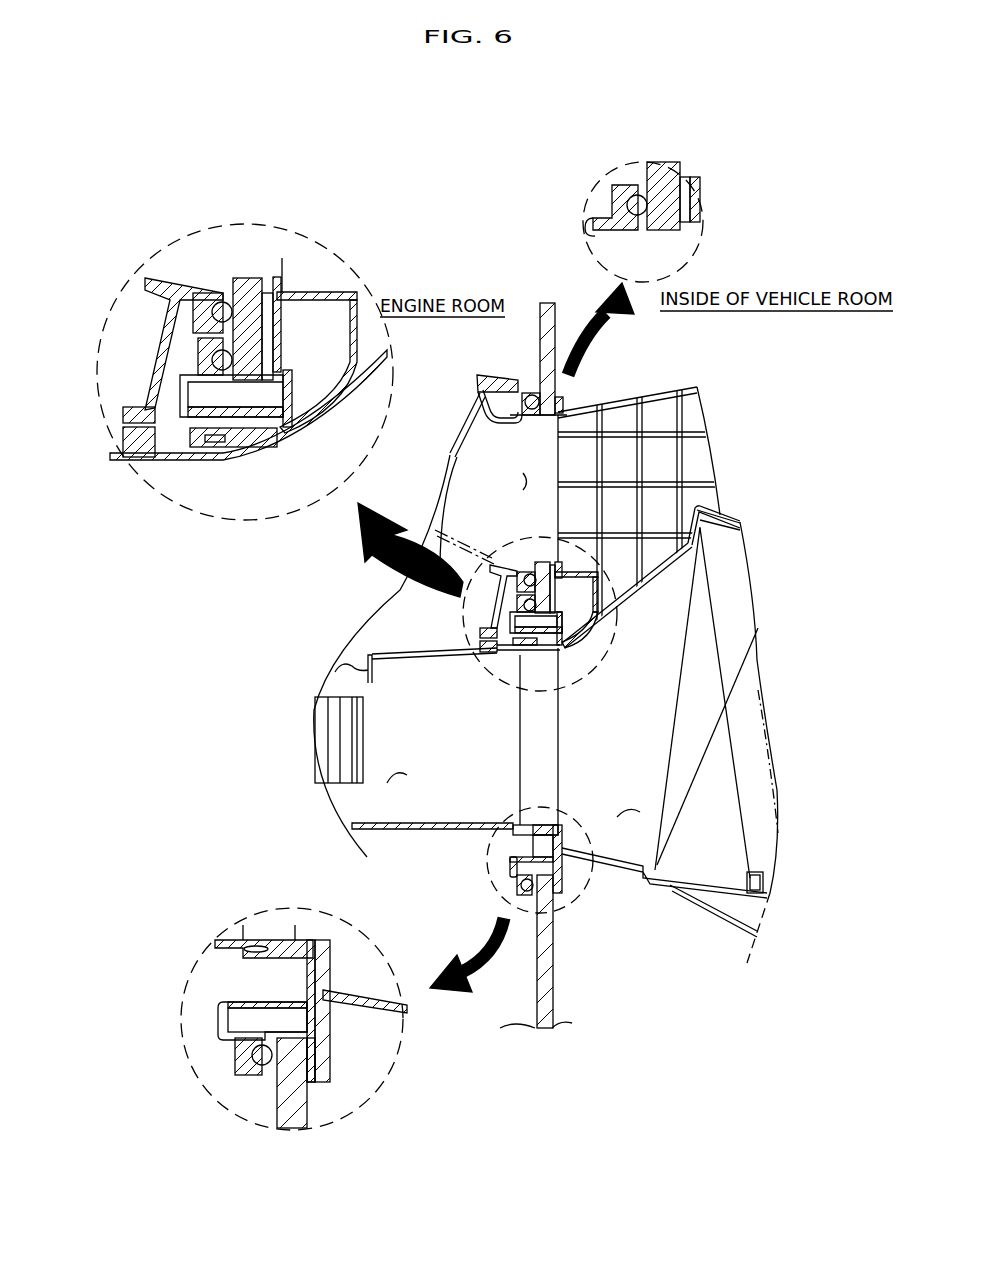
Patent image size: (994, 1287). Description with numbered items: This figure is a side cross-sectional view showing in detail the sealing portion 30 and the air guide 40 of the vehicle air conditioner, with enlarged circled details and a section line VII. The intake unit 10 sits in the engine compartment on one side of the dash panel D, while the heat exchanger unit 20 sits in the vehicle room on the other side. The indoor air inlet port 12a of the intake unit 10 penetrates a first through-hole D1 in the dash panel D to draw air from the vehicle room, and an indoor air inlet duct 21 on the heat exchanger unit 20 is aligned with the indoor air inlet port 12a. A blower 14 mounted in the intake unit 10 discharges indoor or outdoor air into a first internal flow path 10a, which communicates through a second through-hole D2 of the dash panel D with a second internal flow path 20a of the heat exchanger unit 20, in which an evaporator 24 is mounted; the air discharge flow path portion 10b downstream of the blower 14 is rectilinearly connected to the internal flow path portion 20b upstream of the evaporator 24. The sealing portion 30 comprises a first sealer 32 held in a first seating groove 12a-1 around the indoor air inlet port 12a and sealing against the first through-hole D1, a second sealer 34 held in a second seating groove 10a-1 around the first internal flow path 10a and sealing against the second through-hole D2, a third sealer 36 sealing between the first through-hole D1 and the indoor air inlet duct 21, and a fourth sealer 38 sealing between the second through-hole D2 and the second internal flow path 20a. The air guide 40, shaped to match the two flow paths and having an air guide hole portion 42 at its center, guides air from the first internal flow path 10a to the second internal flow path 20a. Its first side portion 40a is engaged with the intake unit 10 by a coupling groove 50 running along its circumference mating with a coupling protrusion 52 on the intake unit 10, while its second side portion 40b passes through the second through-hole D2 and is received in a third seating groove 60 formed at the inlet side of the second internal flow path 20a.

The intake unit 10 is at (138, 457).
The first internal flow path 10a is at (162, 487).
The second seating groove 10a-1 is at (147, 280).
The air discharge flow path portion 10b is at (380, 838).
The indoor air inlet port 12a is at (172, 270).
The first seating groove 12a-1 is at (207, 290).
The blower 14 is at (318, 735).
The heat exchanger unit 20 is at (722, 955).
The second internal flow path 20a is at (348, 978).
The internal flow path portion 20b is at (648, 880).
The indoor air inlet duct 21 is at (308, 295).
The evaporator 24 is at (693, 855).
The sealing portion 30 is at (538, 620).
The first sealer 32 is at (221, 302).
The second sealer 34 is at (230, 372).
The third sealer 36 is at (313, 298).
The fourth sealer 38 is at (387, 360).
The air guide 40 is at (162, 394).
The first side portion 40a is at (497, 652).
The second side portion 40b is at (600, 707).
The air guide hole portion 42 is at (507, 827).
The coupling groove 50 is at (195, 460).
The coupling protrusion 52 is at (212, 458).
The third seating groove 60 is at (272, 450).
The dash panel D is at (552, 345).
The first through-hole D1 is at (240, 280).
The second through-hole D2 is at (590, 850).
The section line VII is at (256, 731).